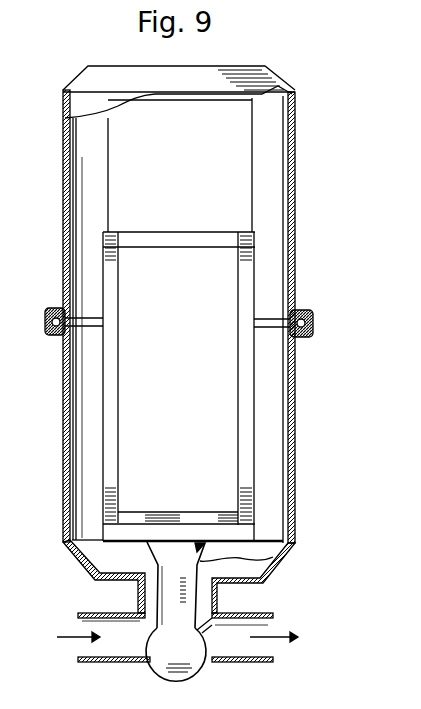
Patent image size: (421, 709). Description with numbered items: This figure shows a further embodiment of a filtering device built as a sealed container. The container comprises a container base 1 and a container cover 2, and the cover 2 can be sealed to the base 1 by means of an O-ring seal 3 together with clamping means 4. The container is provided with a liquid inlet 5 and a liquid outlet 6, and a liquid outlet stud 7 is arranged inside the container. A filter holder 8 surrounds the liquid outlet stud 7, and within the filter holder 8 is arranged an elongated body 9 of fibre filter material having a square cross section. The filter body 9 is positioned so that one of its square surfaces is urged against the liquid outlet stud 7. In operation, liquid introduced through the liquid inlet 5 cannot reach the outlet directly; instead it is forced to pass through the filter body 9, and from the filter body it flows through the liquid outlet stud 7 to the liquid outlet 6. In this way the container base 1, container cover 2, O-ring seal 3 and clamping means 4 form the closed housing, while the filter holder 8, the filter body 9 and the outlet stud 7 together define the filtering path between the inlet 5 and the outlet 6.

The container base 1 is at (292, 433).
The container cover 2 is at (291, 222).
The O-ring seal 3 is at (300, 312).
The clamping means 4 is at (315, 323).
The liquid inlet 5 is at (90, 612).
The liquid outlet 6 is at (262, 612).
The liquid outlet stud 7 is at (273, 560).
The filter holder 8 is at (254, 478).
The elongated body of fibre filter material 9 is at (233, 168).